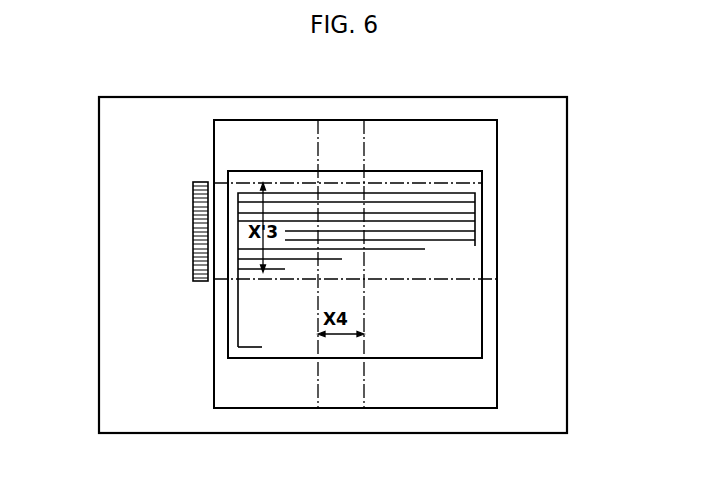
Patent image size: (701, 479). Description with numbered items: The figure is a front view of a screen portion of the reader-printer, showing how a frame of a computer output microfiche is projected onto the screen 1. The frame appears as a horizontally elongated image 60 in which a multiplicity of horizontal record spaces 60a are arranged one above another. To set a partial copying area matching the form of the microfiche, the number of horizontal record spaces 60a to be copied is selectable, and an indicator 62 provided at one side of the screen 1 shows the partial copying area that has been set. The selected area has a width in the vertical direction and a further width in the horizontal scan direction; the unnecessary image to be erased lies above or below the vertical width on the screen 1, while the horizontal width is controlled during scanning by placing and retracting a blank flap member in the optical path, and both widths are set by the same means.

The screen 1 is at (290, 392).
The horizontally elongated image 60 is at (460, 172).
The horizontal record spaces 60a is at (382, 220).
The indicator 62 is at (193, 233).